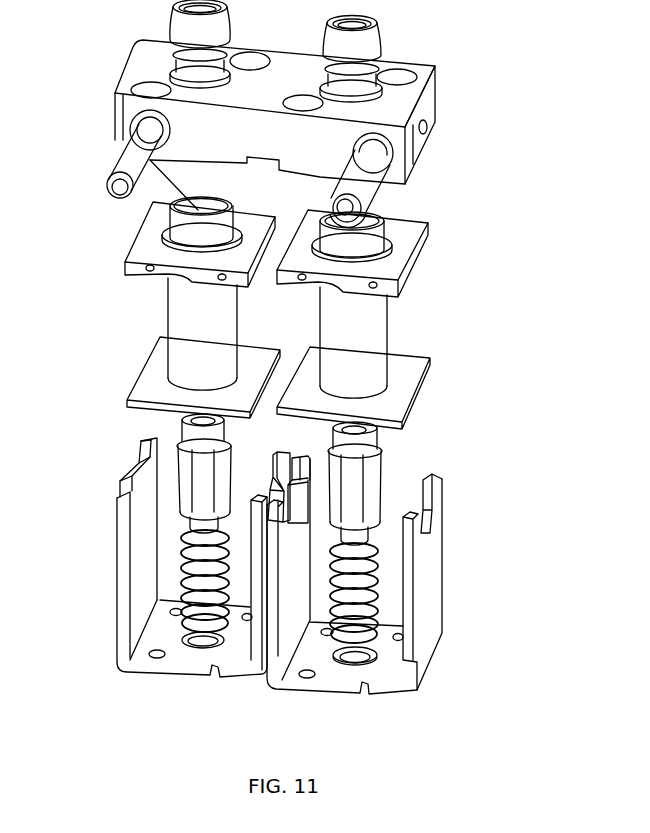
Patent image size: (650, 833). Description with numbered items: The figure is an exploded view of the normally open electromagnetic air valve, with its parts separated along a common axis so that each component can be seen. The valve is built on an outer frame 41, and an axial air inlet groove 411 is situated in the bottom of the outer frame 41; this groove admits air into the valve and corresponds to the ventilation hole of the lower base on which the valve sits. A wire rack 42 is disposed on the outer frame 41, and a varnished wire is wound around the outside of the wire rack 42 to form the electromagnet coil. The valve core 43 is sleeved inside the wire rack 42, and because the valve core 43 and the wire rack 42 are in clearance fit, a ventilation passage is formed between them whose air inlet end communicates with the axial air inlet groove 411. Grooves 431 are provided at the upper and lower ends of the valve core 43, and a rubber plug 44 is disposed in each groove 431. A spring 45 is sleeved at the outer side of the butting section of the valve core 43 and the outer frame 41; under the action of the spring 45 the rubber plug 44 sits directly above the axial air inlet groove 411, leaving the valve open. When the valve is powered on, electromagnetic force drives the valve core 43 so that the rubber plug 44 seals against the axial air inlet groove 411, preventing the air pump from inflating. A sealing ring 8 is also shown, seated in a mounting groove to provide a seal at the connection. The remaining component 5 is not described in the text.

The valve block 5 is at (436, 66).
The groove 431 is at (120, 131).
The sealing ring 8 is at (162, 245).
The wire rack 42 is at (397, 235).
The valve core 43 is at (367, 482).
The spring 45 is at (181, 561).
The outer frame 41 is at (145, 598).
The rubber plug 44 is at (374, 545).
The axial air inlet groove 411 is at (390, 650).